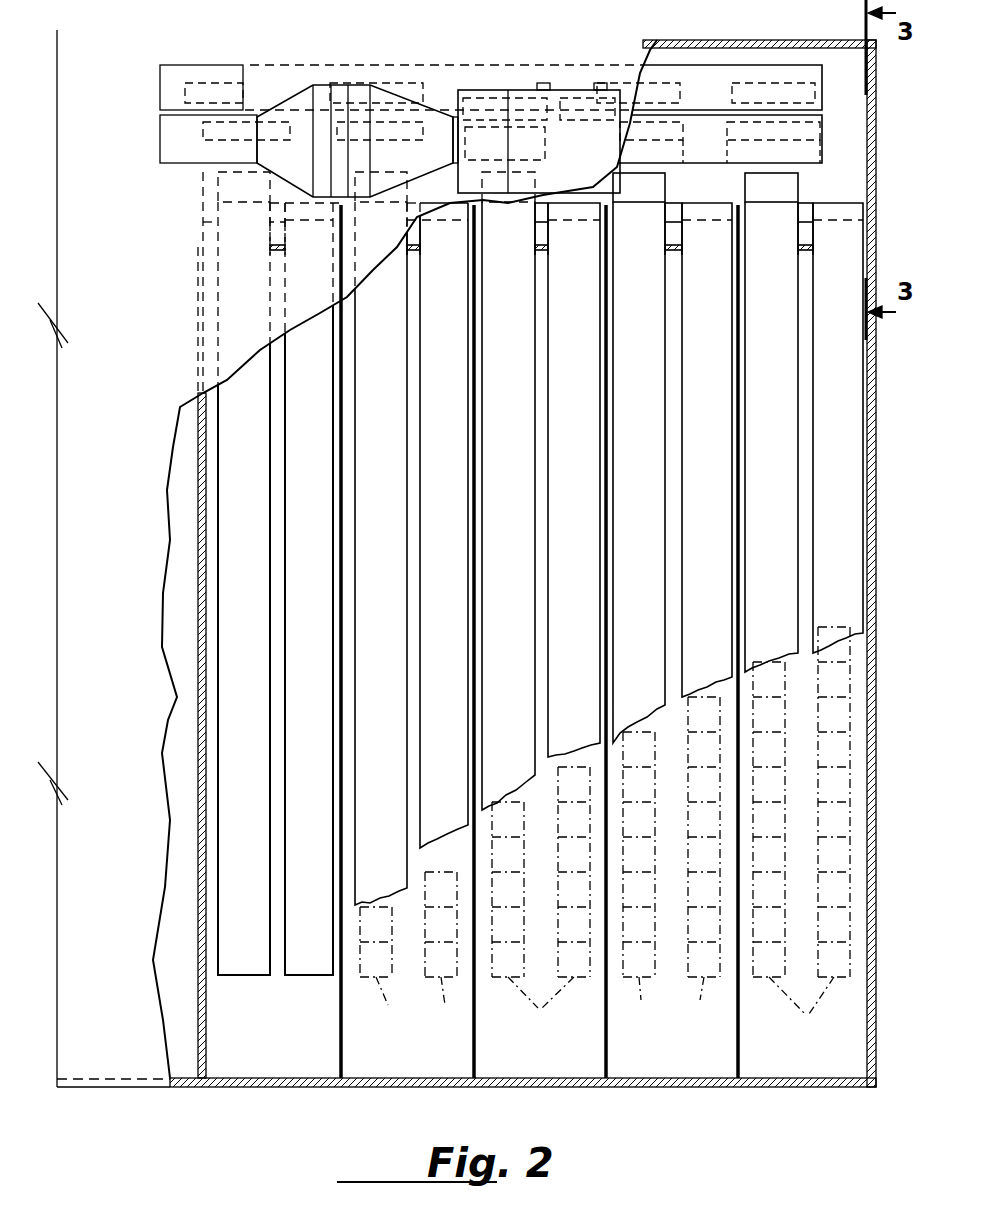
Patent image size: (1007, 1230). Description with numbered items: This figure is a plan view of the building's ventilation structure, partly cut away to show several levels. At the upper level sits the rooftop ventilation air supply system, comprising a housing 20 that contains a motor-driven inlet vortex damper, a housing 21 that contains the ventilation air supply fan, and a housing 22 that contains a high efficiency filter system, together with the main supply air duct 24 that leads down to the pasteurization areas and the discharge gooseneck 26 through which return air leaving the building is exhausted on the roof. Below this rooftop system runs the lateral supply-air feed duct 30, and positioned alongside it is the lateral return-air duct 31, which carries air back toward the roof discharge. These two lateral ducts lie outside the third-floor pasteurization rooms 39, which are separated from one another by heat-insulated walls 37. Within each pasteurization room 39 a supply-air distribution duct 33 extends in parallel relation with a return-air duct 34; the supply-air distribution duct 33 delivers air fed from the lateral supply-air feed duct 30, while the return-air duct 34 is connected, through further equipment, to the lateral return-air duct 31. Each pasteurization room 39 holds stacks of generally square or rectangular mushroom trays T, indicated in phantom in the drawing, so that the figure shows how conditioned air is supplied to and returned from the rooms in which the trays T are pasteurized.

The housing 20 is at (567, 97).
The housing 21 is at (478, 95).
The housing 22 is at (383, 98).
The main supply air duct 24 is at (170, 137).
The discharge gooseneck 26 is at (193, 80).
The lateral supply-air feed duct 30 is at (820, 137).
The lateral return-air duct 31 is at (817, 72).
The supply-air distribution duct 33 is at (233, 488).
The return-air duct 34 is at (298, 488).
The heat-insulated walls 37 is at (338, 1007).
The pasteurization rooms 39 is at (255, 1064).
The mushroom trays T is at (605, 1007).